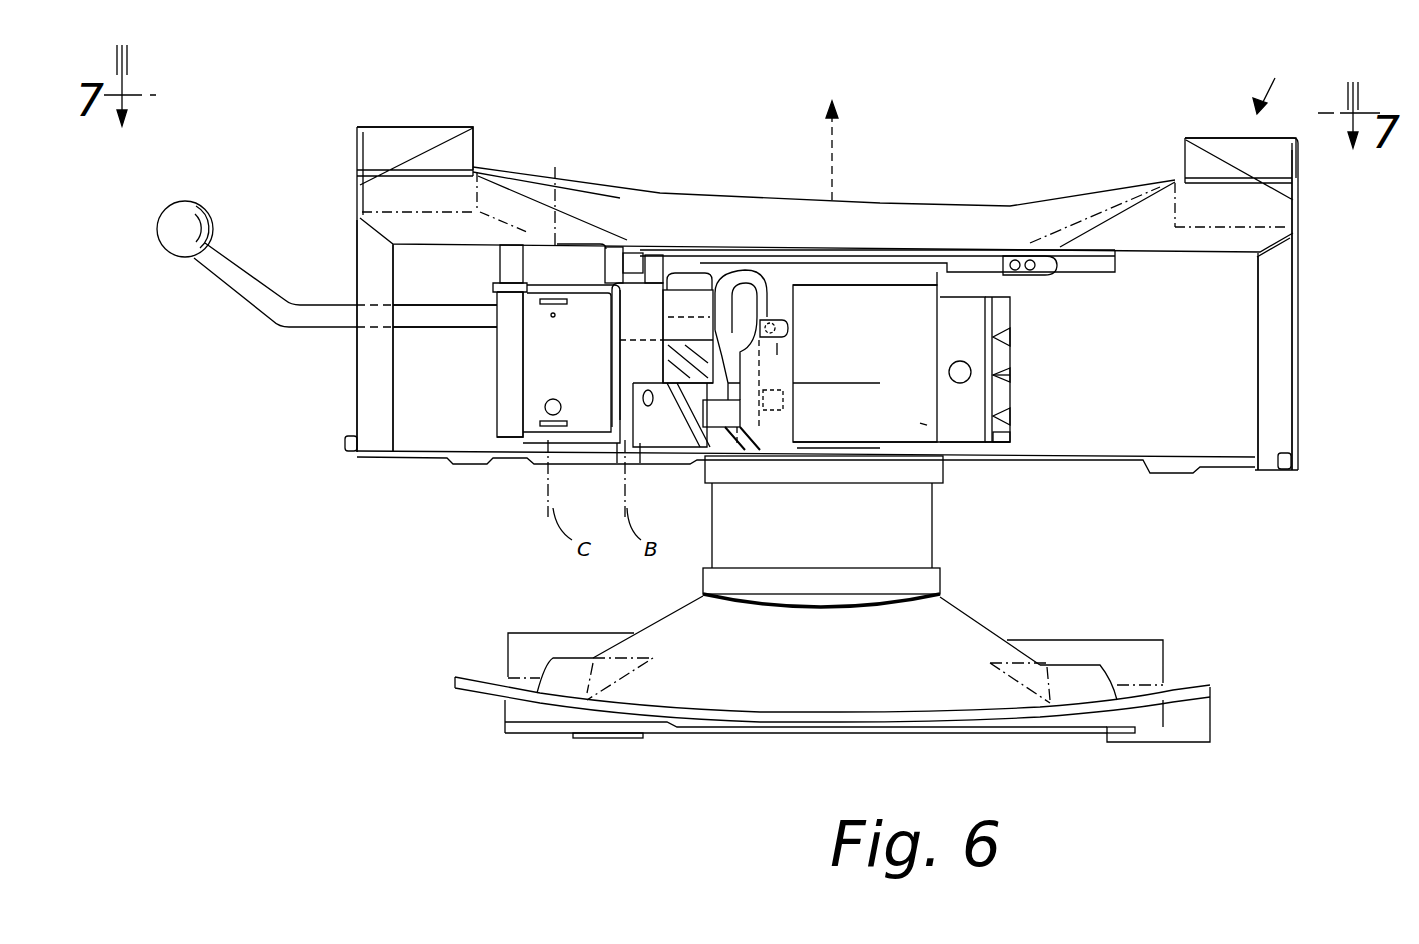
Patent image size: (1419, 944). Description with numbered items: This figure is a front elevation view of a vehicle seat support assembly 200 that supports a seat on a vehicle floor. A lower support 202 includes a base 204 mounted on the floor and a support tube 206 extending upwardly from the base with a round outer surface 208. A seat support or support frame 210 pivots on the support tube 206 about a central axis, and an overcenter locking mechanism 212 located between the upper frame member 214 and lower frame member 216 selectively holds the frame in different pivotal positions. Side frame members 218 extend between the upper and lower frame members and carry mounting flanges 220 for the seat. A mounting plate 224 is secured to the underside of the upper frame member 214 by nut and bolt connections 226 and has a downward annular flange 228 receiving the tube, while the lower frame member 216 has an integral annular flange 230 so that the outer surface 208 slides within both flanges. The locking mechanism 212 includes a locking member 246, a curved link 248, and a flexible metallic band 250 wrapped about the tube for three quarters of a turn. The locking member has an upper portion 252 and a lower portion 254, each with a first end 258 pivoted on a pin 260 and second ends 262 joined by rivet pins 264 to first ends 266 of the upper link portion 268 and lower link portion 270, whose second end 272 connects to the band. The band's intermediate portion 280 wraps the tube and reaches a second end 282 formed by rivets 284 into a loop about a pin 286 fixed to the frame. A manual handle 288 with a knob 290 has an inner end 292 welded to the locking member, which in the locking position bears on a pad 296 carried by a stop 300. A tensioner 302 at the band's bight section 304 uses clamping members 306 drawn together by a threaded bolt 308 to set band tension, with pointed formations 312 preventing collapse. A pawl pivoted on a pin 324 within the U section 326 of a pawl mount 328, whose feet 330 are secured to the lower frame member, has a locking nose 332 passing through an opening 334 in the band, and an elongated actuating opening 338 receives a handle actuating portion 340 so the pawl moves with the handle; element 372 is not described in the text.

The vehicle seat support assembly 200 is at (1283, 79).
The lower support 202 is at (1036, 622).
The base 204 is at (1167, 660).
The support tube 206 is at (932, 555).
The round outer surface 208 is at (910, 535).
The seat support or support frame 210 is at (1300, 304).
The overcenter locking mechanism 212 is at (673, 263).
The upper frame member 214 is at (1033, 198).
The lower frame member 216 is at (1128, 470).
The side frame members 218 is at (1285, 388).
The mounting flanges 220 is at (437, 137).
The mounting plate 224 is at (972, 298).
The nut and bolt connections 226 is at (1060, 247).
The annular flange 228 is at (865, 363).
The integral annular flange 230 is at (863, 473).
The locking member 246 is at (688, 336).
The curved link 248 is at (652, 262).
The flexible metallic band 250 is at (877, 298).
The upper portion 252 is at (587, 297).
The lower portion 254 is at (592, 428).
The first end 258 is at (962, 369).
The pin 260 is at (632, 250).
The second ends 262 is at (540, 300).
The rivet pins 264 is at (546, 285).
The first ends 266 is at (500, 274).
The upper link portion 268 is at (588, 263).
The lower link portion 270 is at (580, 495).
The second end 272 is at (703, 262).
The intermediate portion 280 is at (927, 425).
The second end 282 is at (497, 345).
The rivets 284 is at (555, 399).
The pin 286 is at (500, 258).
The manual handle 288 is at (287, 333).
The knob 290 is at (203, 212).
The inner end 292 is at (663, 361).
The pad 296 is at (670, 415).
The stop 300 is at (657, 457).
The tensioner 302 is at (1005, 362).
The bight section 304 is at (1010, 434).
The clamping members 306 is at (947, 392).
The threaded bolt 308 is at (1010, 376).
The pointed formations 312 is at (1010, 338).
The pin 324 is at (755, 425).
The U section 326 is at (713, 455).
The pawl mount 328 is at (753, 477).
The feet 330 is at (862, 428).
The locking nose 332 is at (780, 348).
The opening 334 is at (779, 348).
The elongated actuating opening 338 is at (760, 290).
The handle actuating portion 340 is at (790, 327).
The stop 372 is at (686, 358).